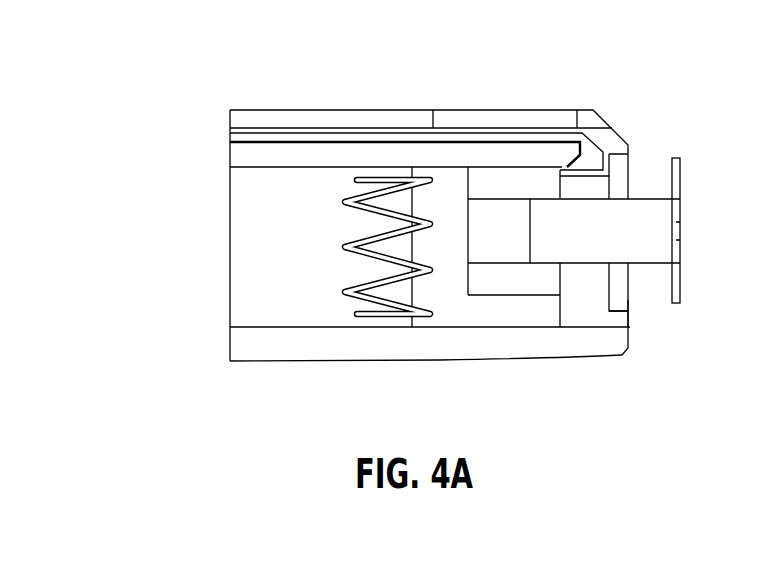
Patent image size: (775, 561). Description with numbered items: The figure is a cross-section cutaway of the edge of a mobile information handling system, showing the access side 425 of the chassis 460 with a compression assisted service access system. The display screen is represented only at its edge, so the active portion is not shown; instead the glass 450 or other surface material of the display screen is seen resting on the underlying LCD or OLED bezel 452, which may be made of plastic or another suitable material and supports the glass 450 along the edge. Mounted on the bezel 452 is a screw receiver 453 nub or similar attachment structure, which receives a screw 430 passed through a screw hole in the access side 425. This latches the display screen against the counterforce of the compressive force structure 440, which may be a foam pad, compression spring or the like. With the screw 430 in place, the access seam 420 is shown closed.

The access seam 420 is at (565, 116).
The access side 425 is at (611, 315).
The screw 430 is at (680, 158).
The compressive force structure 440 is at (381, 317).
The glass 450 is at (230, 133).
The bezel 452 is at (230, 156).
The screw receiver 453 is at (499, 176).
The mobile information handling system chassis 460 is at (297, 362).